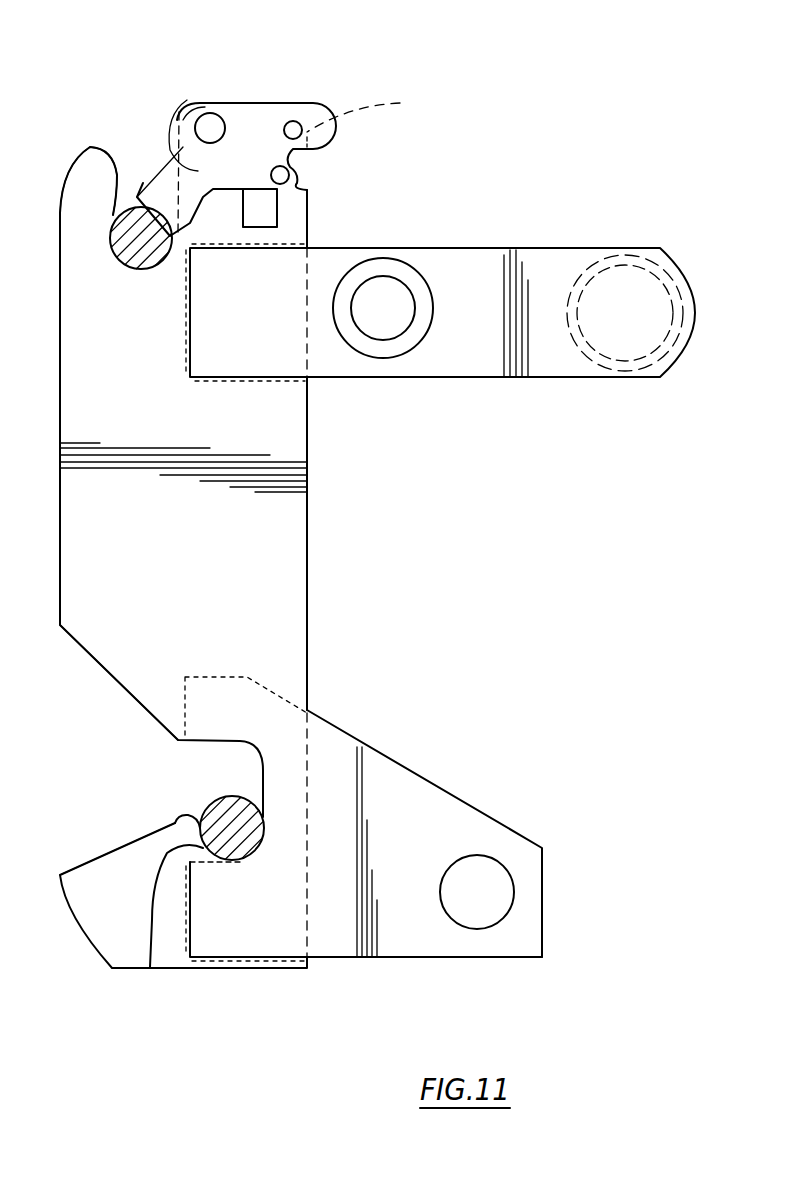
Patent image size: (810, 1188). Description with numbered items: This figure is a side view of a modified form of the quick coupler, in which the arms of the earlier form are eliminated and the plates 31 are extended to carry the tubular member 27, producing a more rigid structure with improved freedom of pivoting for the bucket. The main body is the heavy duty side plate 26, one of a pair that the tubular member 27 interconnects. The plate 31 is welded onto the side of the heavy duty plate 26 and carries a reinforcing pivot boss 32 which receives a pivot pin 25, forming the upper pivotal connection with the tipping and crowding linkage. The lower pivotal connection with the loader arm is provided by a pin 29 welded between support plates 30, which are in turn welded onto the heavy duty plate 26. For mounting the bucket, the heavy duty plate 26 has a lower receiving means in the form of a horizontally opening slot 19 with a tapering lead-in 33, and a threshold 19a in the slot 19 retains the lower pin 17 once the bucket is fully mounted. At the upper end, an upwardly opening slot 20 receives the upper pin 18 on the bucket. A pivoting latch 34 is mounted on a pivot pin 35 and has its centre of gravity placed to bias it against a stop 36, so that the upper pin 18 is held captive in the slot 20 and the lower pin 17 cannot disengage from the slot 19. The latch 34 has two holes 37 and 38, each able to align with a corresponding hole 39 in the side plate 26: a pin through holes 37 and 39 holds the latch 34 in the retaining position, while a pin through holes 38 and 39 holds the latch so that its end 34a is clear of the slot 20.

The lower pin 17 is at (237, 837).
The upper pin 18 is at (125, 233).
The horizontally opening slot 19 is at (150, 967).
The threshold 19a is at (183, 823).
The upwardly opening slot 20 is at (125, 200).
The pivot pin 25 is at (393, 327).
The heavy duty side plate 26 is at (270, 542).
The tubular member 27 is at (583, 347).
The pin 29 is at (482, 883).
The support plate 30 is at (340, 918).
The plate 31 is at (357, 257).
The reinforcing pivot boss 32 is at (417, 285).
The tapering lead-in 33 is at (158, 723).
The pivoting latch 34 is at (213, 127).
The latch end 34a is at (143, 183).
The pivot pin 35 is at (247, 103).
The stop 36 is at (263, 207).
The hole 37 is at (303, 121).
The hole 38 is at (290, 170).
The hole 39 is at (377, 112).